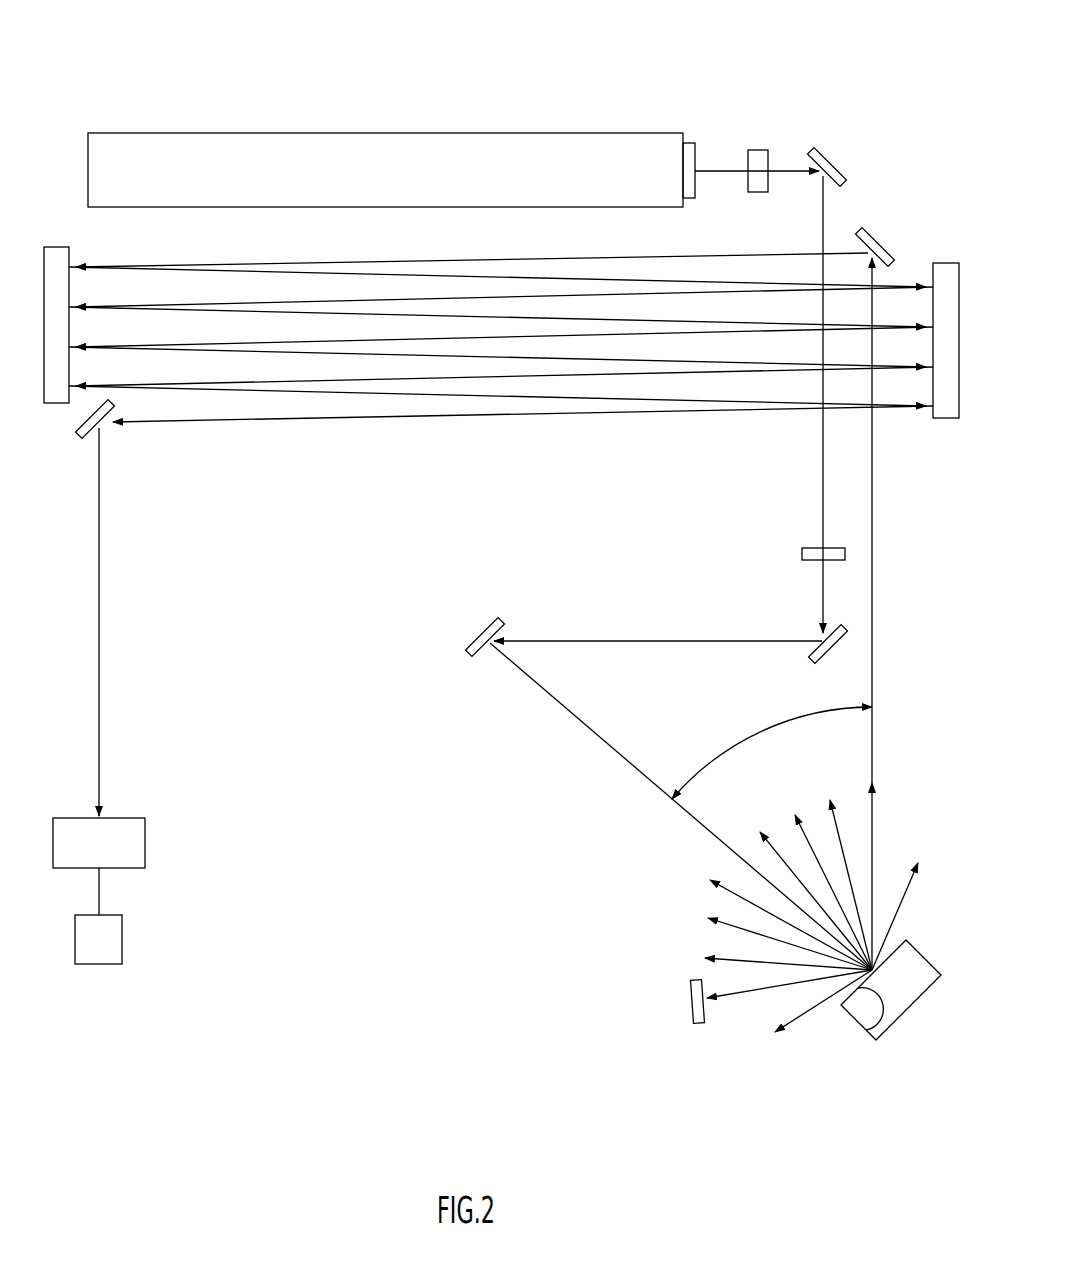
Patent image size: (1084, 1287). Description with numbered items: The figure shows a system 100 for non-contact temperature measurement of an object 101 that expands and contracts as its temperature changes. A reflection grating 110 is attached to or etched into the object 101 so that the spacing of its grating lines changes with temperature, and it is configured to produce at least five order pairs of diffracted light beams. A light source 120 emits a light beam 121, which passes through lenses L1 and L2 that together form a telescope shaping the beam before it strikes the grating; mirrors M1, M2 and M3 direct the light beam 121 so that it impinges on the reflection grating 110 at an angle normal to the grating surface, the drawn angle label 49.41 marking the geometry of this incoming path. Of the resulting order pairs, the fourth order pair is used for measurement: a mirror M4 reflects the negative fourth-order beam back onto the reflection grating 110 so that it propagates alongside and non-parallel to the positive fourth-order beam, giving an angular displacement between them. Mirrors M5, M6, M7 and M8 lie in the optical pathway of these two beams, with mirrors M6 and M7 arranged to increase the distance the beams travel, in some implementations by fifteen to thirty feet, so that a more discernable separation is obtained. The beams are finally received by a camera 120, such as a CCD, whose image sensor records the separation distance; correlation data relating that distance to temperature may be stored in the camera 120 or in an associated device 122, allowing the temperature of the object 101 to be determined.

The system for non-contact temperature measurement 100 is at (657, 35).
The light source / camera 120 is at (530, 133).
The light beam 121 is at (717, 170).
The device 122 is at (122, 938).
The object 101 is at (927, 962).
The reflection grating 110 is at (866, 1030).
The lens L1 is at (757, 153).
The lens L2 is at (809, 552).
The mirror M1 is at (836, 383).
The mirror M2 is at (676, 654).
The mirror M3 is at (661, 785).
The mirror M4 is at (680, 1002).
The mirror M5 is at (494, 238).
The mirror M6 is at (485, 308).
The mirror M7 is at (518, 361).
The mirror M8 is at (79, 608).
The diffraction angle 49.41 is at (772, 751).